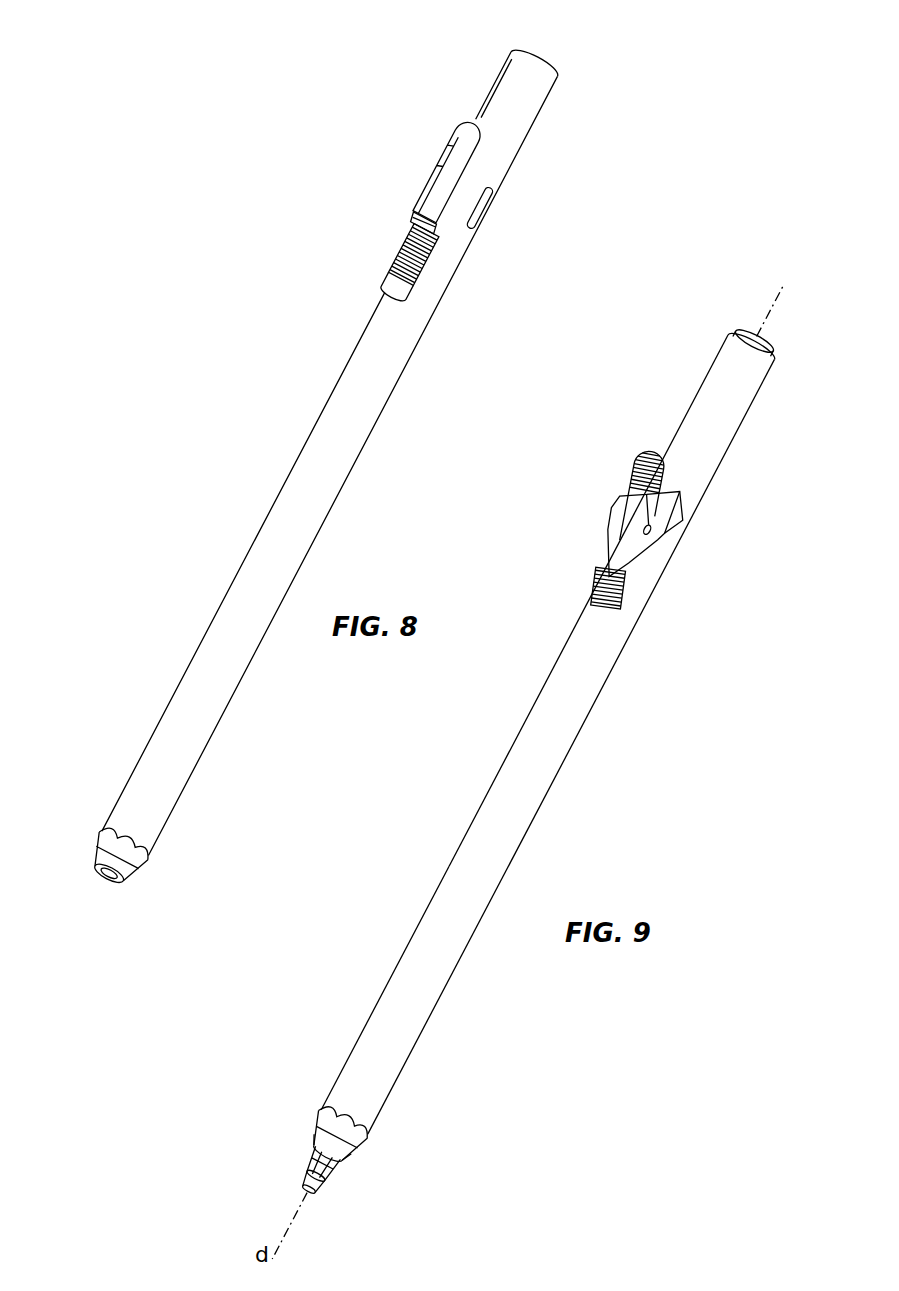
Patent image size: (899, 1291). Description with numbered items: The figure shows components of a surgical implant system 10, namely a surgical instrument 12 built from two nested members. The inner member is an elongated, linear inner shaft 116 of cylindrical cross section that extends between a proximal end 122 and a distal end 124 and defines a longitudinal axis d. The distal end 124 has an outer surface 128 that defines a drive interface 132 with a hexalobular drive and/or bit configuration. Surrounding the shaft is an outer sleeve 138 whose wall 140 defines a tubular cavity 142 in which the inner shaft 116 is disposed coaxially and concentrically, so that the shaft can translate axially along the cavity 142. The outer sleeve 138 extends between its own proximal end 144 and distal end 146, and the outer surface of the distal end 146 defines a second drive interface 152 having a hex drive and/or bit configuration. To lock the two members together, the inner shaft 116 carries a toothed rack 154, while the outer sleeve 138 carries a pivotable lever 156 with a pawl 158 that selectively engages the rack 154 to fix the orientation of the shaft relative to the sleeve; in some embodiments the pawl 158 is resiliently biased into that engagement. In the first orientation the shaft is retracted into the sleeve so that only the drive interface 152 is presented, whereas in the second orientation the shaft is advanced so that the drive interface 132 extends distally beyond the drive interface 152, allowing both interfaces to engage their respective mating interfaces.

In FIG. 8, the surgical implant system 10 is at (450, 387).
In FIG. 9, the surgical implant system 10 is at (778, 659).
In FIG. 8, the surgical instrument 12 is at (205, 296).
In FIG. 9, the surgical instrument 12 is at (668, 714).
In FIG. 8, the inner shaft 116 is at (535, 58).
In FIG. 9, the inner shaft 116 is at (765, 327).
In FIG. 9, the proximal end 122 is at (775, 337).
In FIG. 9, the distal end 124 is at (333, 1173).
In FIG. 9, the outer surface 128 is at (327, 1192).
In FIG. 8, the drive interface 132 is at (107, 877).
In FIG. 9, the drive interface 132 is at (310, 1188).
In FIG. 8, the outer sleeve 138 is at (280, 498).
In FIG. 9, the outer sleeve 138 is at (530, 715).
In FIG. 9, the wall 140 is at (502, 807).
In FIG. 9, the tubular cavity 142 is at (317, 1143).
In FIG. 9, the proximal end 144 is at (728, 350).
In FIG. 9, the distal end 146 is at (400, 1068).
In FIG. 8, the drive interface 152 is at (137, 851).
In FIG. 9, the drive interface 152 is at (360, 1140).
In FIG. 8, the toothed rack 154 is at (400, 262).
In FIG. 9, the toothed rack 154 is at (598, 585).
In FIG. 8, the pivotable lever 156 is at (470, 136).
In FIG. 9, the pivotable lever 156 is at (665, 467).
In FIG. 8, the pawl 158 is at (428, 221).
In FIG. 9, the pawl 158 is at (625, 574).